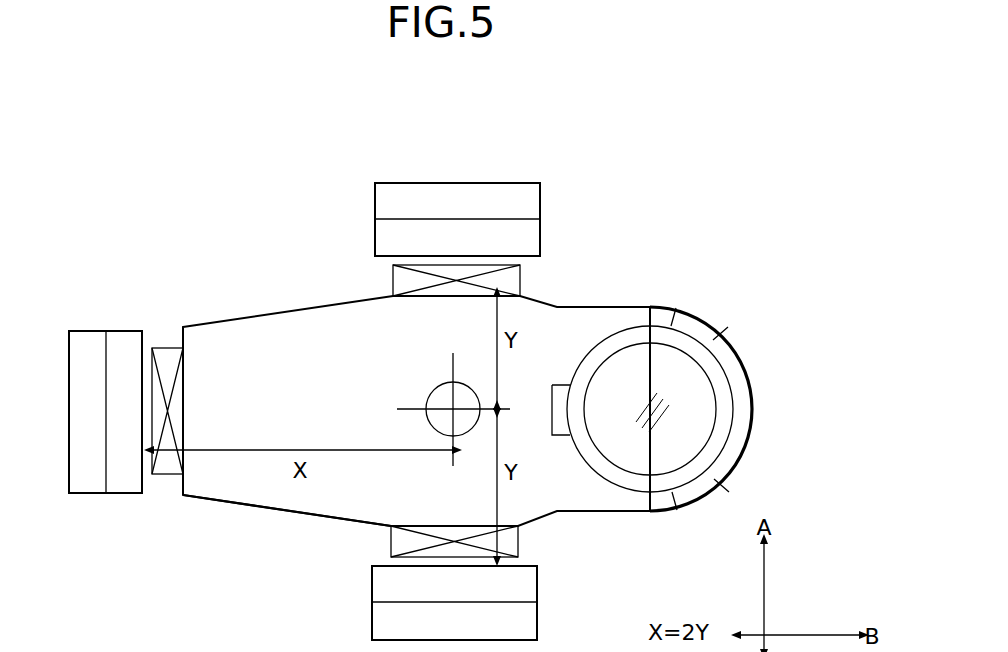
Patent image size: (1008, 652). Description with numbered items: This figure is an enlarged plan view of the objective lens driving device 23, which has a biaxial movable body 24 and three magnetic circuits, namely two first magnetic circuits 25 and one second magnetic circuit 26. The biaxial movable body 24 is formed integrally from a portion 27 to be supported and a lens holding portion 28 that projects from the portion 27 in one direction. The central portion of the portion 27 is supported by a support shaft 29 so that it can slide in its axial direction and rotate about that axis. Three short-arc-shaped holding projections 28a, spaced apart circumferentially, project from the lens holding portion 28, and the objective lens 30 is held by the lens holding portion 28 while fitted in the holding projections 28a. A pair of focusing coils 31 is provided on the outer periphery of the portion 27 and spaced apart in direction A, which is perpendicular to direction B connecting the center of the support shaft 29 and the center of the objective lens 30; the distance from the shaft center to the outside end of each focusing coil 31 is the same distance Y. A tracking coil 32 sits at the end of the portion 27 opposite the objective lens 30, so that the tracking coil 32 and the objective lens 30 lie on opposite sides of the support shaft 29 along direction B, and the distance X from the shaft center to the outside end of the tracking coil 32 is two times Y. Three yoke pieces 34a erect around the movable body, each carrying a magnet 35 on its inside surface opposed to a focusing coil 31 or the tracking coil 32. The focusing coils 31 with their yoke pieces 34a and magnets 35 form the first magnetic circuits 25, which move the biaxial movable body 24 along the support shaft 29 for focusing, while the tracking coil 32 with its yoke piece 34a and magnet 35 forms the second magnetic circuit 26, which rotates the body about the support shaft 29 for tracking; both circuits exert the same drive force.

The objective lens driving device 23 is at (595, 162).
The biaxial movable body 24 is at (282, 324).
The first magnetic circuit 25 is at (625, 224).
The second magnetic circuit 26 is at (83, 512).
The portion to be supported 27 is at (265, 502).
The lens holding portion 28 is at (756, 408).
The holding projections 28a is at (552, 395).
The support shaft 29 is at (432, 389).
The objective lens 30 is at (703, 390).
The focusing coils 31 is at (516, 283).
The tracking coil 32 is at (167, 347).
The yoke pieces 34a is at (94, 330).
The magnets 35 is at (121, 496).